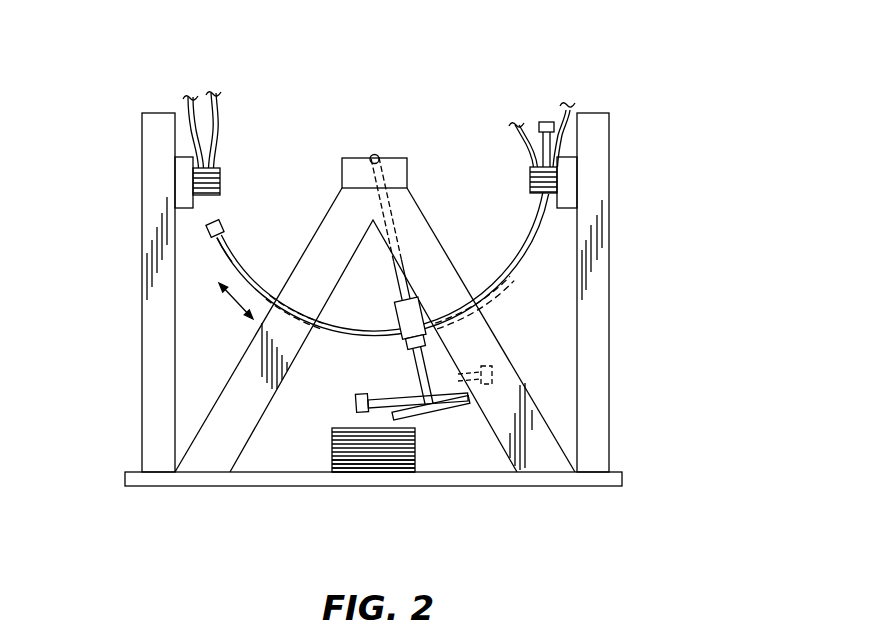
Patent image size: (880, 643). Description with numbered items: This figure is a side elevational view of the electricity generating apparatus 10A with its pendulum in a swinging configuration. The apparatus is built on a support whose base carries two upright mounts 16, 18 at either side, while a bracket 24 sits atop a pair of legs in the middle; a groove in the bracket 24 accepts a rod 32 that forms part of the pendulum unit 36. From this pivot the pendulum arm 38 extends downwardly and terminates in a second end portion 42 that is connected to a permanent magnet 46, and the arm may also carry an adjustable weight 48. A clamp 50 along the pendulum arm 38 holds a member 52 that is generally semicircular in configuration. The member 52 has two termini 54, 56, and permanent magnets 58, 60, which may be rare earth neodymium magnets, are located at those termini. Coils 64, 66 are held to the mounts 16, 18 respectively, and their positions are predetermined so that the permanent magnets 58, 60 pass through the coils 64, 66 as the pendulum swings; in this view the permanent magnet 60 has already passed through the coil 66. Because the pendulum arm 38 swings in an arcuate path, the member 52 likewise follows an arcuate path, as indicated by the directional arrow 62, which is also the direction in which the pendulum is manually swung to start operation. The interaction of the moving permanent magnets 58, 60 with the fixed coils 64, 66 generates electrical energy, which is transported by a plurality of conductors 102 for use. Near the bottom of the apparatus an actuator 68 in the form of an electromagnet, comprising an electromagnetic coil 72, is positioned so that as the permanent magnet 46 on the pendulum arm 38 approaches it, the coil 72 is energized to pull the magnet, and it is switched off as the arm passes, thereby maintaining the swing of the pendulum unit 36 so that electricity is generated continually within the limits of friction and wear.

The electricity generating apparatus 10A is at (632, 172).
The mount 16 is at (150, 172).
The mount 18 is at (600, 280).
The bracket 24 is at (350, 158).
The rod 32 is at (380, 156).
The plurality of conductors 102 is at (237, 153).
The coil 64 is at (218, 136).
The member 52 is at (243, 262).
The directional arrow 62 is at (235, 303).
The permanent magnet 58 is at (224, 225).
The terminus 54 is at (215, 238).
The pendulum arm 38 is at (402, 280).
The pendulum unit 36 is at (398, 353).
The clamp 50 is at (395, 310).
The second end portion 42 is at (430, 363).
The permanent magnet 46 is at (435, 414).
The adjustable weight 48 is at (353, 403).
The actuator 68 is at (318, 448).
The electromagnetic coil 72 is at (389, 464).
The coil 66 is at (530, 168).
The permanent magnet 60 is at (540, 122).
The terminus 56 is at (553, 108).